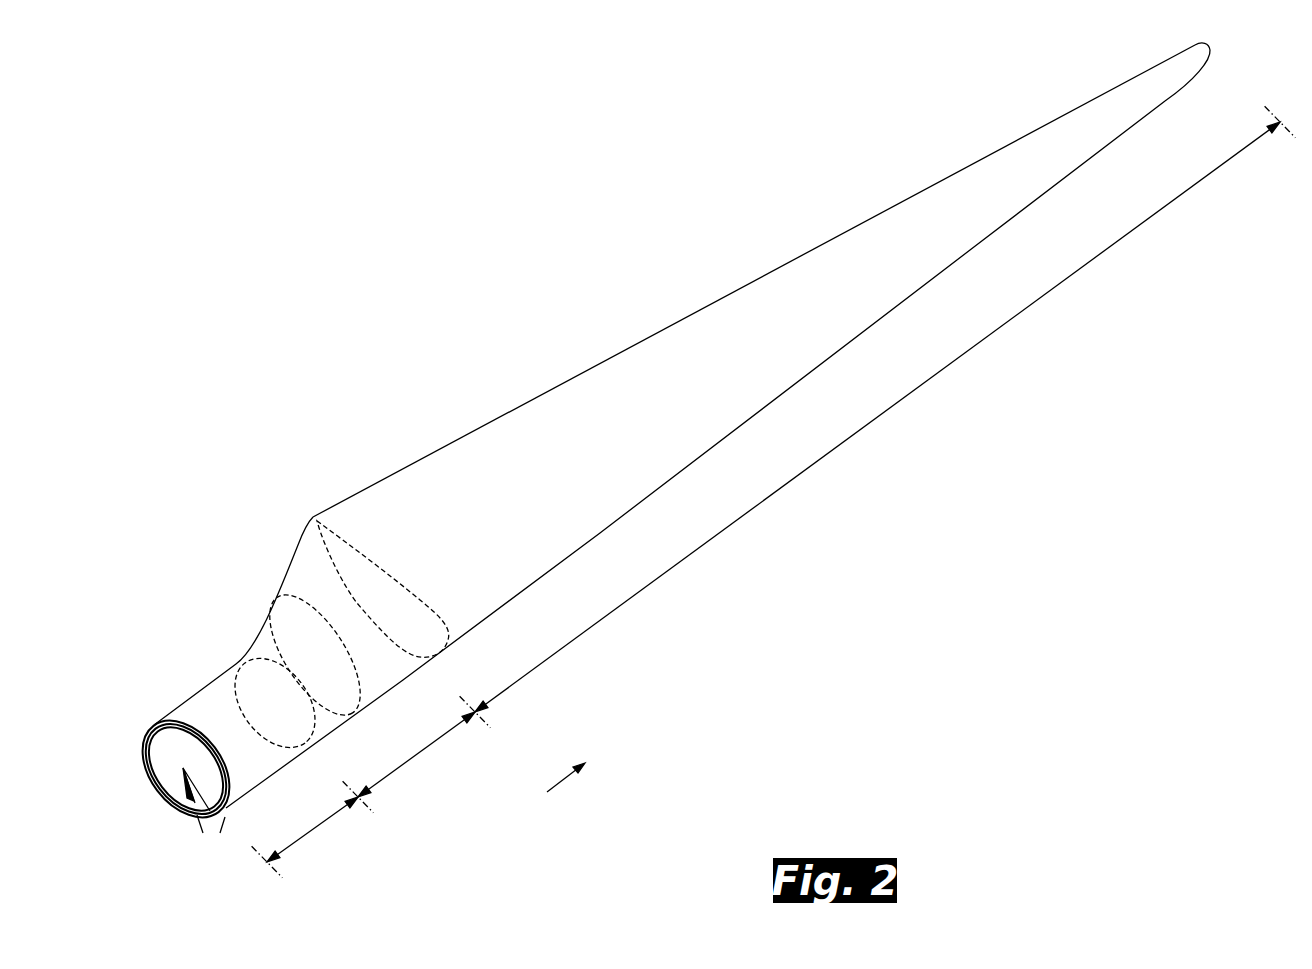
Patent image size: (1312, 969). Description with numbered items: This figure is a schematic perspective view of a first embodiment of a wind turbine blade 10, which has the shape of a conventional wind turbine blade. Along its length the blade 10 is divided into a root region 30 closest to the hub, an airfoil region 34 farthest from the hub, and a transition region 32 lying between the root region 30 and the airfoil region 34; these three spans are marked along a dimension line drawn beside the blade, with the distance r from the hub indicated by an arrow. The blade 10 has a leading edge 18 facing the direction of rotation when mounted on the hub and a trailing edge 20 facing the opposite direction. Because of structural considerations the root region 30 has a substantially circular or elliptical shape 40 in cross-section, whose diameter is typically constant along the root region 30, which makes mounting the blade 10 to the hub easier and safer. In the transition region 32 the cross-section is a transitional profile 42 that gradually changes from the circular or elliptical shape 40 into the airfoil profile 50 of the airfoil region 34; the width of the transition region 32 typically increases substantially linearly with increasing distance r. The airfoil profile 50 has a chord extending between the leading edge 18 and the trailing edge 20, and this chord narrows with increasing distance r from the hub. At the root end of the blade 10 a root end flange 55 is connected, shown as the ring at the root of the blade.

The wind turbine blade 10 is at (637, 442).
The leading edge 18 is at (888, 313).
The trailing edge 20 is at (897, 203).
The root region 30 is at (315, 830).
The transition region 32 is at (420, 753).
The airfoil region 34 is at (797, 477).
The circular or elliptical shape 40 is at (222, 693).
The transitional profile 42 is at (293, 598).
The airfoil profile 50 is at (333, 535).
The root end flange 55 is at (147, 738).
The distance from the hub r is at (573, 768).